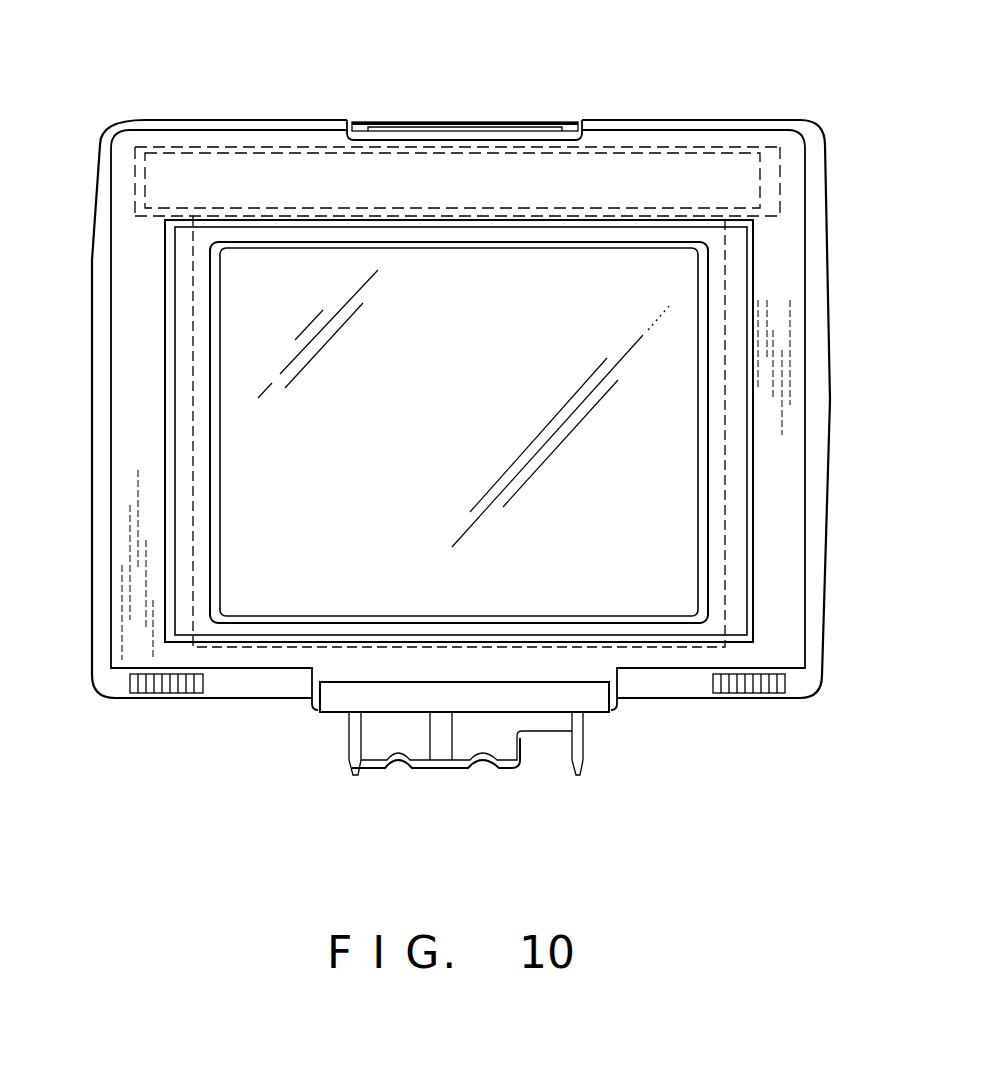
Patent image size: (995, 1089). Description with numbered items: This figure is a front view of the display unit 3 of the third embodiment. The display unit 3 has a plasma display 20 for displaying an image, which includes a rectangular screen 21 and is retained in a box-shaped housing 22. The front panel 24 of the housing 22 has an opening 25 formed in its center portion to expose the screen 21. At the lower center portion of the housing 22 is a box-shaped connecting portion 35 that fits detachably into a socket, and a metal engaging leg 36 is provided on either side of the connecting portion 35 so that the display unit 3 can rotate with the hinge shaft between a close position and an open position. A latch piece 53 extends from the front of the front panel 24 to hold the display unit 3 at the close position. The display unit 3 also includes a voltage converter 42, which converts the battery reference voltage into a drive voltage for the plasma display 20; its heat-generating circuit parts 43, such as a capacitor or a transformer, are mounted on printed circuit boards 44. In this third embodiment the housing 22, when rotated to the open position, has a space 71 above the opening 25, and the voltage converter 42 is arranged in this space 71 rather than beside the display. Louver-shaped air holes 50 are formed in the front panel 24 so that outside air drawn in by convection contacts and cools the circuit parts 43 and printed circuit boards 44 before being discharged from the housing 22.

The display unit 3 is at (243, 106).
The plasma display 20 is at (718, 478).
The screen 21 is at (290, 605).
The housing 22 is at (828, 422).
The front panel 24 is at (125, 362).
The opening 25 is at (222, 441).
The connecting portion 35 is at (471, 756).
The engaging leg 36 is at (358, 780).
The voltage converter 42 is at (672, 143).
The circuit parts 43 is at (755, 178).
The printed circuit board 44 is at (135, 175).
The air holes 50 is at (165, 692).
The latch piece 53 is at (456, 127).
The space 71 is at (318, 140).